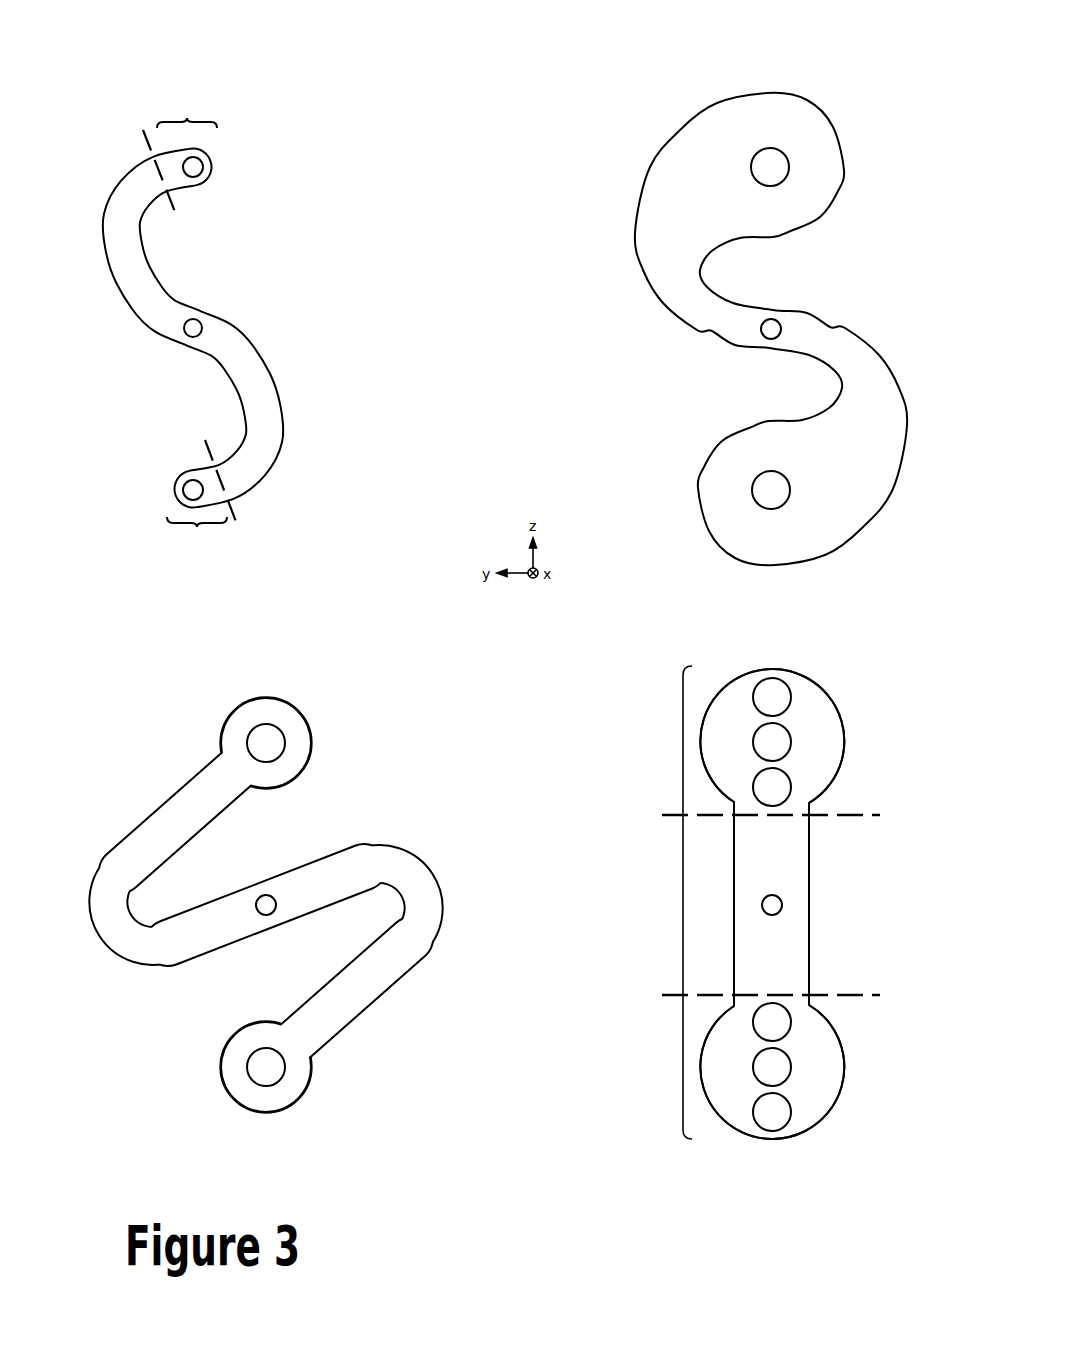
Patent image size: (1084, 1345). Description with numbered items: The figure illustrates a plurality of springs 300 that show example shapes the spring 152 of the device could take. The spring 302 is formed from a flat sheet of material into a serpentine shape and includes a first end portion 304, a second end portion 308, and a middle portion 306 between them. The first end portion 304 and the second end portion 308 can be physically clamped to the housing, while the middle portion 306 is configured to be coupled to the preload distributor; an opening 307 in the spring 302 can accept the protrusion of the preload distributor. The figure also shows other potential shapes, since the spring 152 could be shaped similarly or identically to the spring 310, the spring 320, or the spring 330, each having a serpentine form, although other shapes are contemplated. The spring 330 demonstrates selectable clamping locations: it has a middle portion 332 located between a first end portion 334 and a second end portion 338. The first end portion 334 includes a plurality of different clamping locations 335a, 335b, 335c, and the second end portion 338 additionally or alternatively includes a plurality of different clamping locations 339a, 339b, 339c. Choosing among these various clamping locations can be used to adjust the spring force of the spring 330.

The spring 152 is at (475, 616).
The plurality of springs 300 is at (893, 83).
The spring 302 is at (253, 186).
The first end portion 304 is at (160, 92).
The middle portion 306 is at (142, 360).
The opening 307 is at (232, 305).
The second end portion 308 is at (172, 542).
The spring 310 is at (843, 290).
The spring 320 is at (345, 822).
The spring 330 is at (838, 910).
The middle portion 332 is at (701, 904).
The first end portion 334 is at (722, 736).
The clamping location 335a is at (833, 686).
The clamping location 335b is at (833, 727).
The clamping location 335c is at (833, 772).
The second end portion 338 is at (722, 1072).
The clamping location 339a is at (832, 1119).
The clamping location 339b is at (832, 1073).
The clamping location 339c is at (832, 1033).